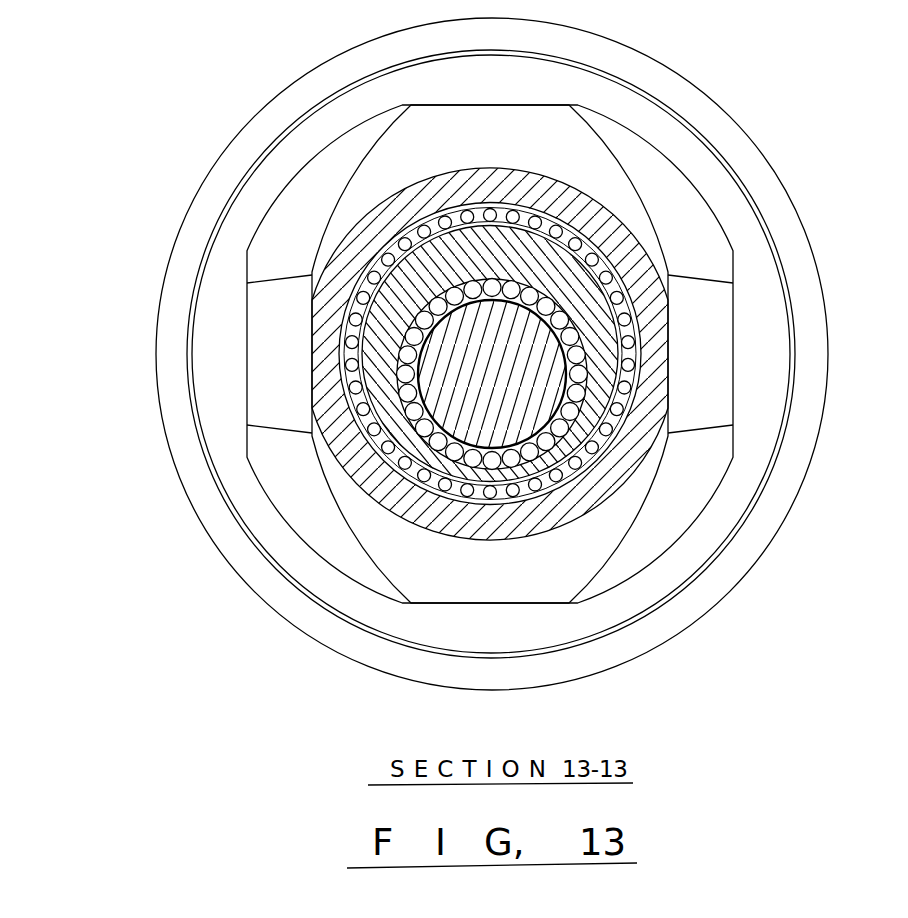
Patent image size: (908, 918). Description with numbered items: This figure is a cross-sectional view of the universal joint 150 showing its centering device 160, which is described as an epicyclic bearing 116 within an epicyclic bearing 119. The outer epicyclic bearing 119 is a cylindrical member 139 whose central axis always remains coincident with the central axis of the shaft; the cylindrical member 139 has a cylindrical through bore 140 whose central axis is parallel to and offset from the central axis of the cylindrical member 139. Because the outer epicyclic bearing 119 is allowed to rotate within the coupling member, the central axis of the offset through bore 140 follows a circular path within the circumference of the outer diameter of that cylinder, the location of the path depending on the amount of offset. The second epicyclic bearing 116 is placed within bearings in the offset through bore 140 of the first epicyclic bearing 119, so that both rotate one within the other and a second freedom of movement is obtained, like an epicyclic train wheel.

The epicyclic bearing 116 is at (455, 400).
The epicyclic bearing 119 is at (645, 343).
The cylindrical member 139 is at (590, 305).
The cylindrical through bore 140 is at (545, 298).
The joint 150 is at (281, 658).
The centering device 160 is at (655, 491).